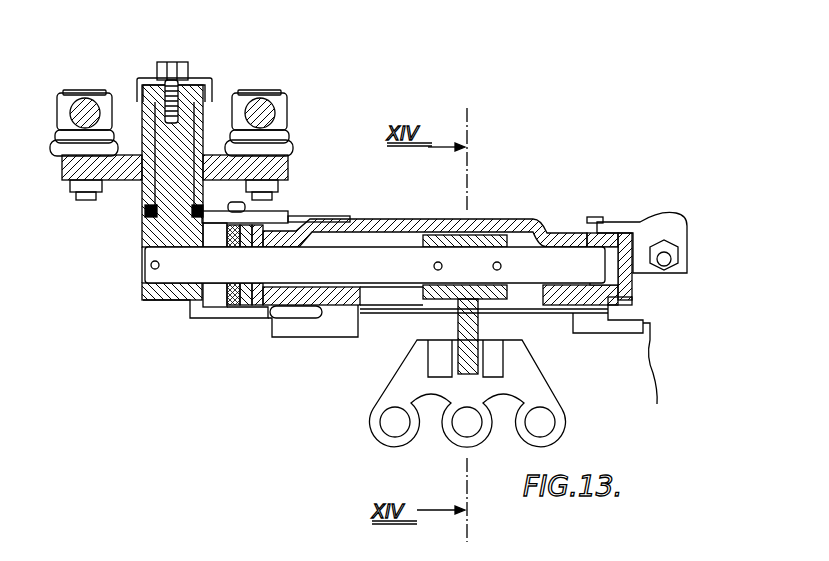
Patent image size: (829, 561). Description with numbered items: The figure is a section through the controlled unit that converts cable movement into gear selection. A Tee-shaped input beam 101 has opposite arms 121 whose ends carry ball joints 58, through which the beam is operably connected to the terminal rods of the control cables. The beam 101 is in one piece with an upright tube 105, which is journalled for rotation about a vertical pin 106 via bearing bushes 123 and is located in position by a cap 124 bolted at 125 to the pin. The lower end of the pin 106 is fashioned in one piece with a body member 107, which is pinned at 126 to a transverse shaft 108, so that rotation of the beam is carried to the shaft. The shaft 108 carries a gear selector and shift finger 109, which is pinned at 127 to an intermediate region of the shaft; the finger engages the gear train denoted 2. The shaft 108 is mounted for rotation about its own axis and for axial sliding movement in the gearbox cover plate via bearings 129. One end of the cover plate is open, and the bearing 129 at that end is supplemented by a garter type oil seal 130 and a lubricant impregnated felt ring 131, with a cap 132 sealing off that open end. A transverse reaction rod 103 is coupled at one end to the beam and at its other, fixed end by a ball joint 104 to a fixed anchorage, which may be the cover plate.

The chain / link cluster 2 is at (478, 358).
The ball joints 58 is at (88, 93).
The input beam 101 is at (138, 117).
The transverse reaction rod 103 is at (563, 232).
The ball joint 104 is at (674, 222).
The upright tube 105 is at (142, 248).
The vertical pin 106 is at (141, 205).
The body member 107 is at (178, 305).
The transverse shaft 108 is at (152, 300).
The gear selector and shift finger 109 is at (457, 322).
The arms 121 is at (289, 168).
The bearing bushes 123 is at (203, 112).
The cap 124 is at (207, 90).
The bolt 125 is at (183, 72).
The pin 126 is at (152, 268).
The pin 127 is at (434, 266).
The bearings 129 is at (282, 305).
The garter type oil seal 130 is at (268, 302).
The lubricant impregnated felt ring 131 is at (258, 306).
The cap 132 is at (218, 308).